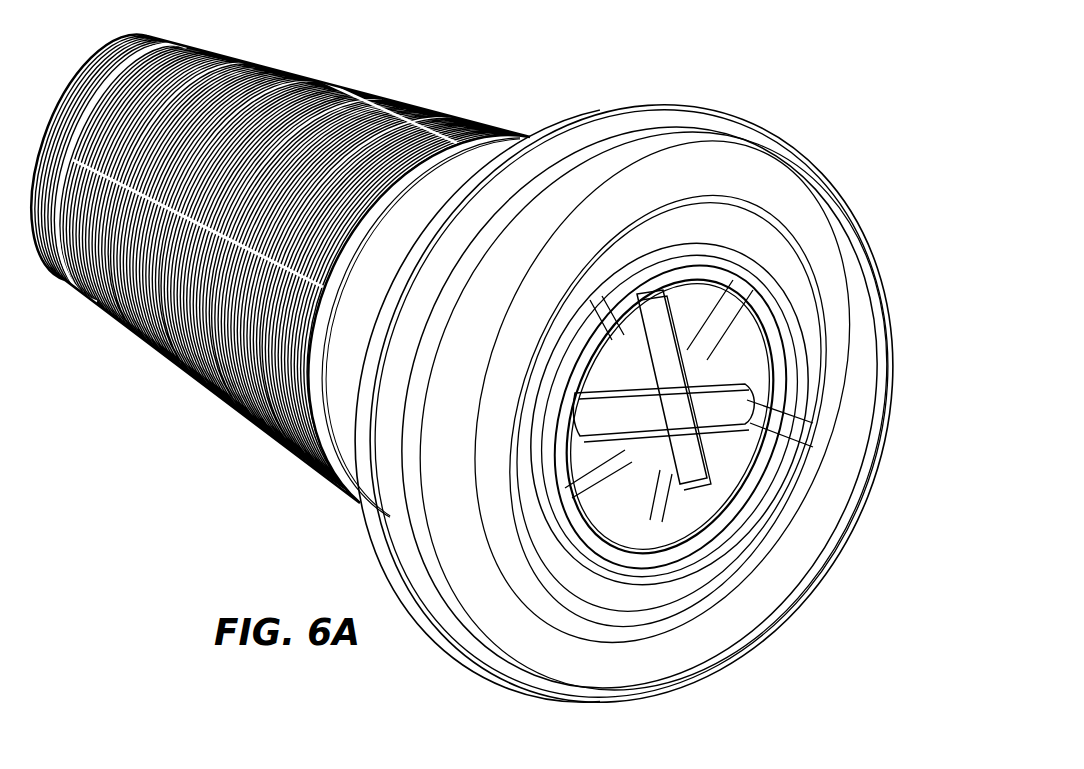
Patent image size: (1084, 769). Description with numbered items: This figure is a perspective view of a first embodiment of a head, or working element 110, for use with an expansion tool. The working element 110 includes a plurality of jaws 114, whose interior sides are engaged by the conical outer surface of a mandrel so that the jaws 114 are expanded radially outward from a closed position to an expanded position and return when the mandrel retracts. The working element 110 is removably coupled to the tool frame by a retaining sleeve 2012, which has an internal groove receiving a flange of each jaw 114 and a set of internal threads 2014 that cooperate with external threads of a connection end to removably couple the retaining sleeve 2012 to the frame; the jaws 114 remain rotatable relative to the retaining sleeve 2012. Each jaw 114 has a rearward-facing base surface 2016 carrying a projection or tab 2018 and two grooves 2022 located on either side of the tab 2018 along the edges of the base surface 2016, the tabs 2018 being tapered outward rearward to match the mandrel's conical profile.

The working element 110 is at (523, 65).
The jaws 114 is at (283, 63).
The retaining sleeve 2012 is at (661, 119).
The internal threads 2014 is at (720, 553).
The base surface 2016 is at (582, 520).
The tab 2018 is at (712, 488).
The grooves 2022 is at (575, 462).